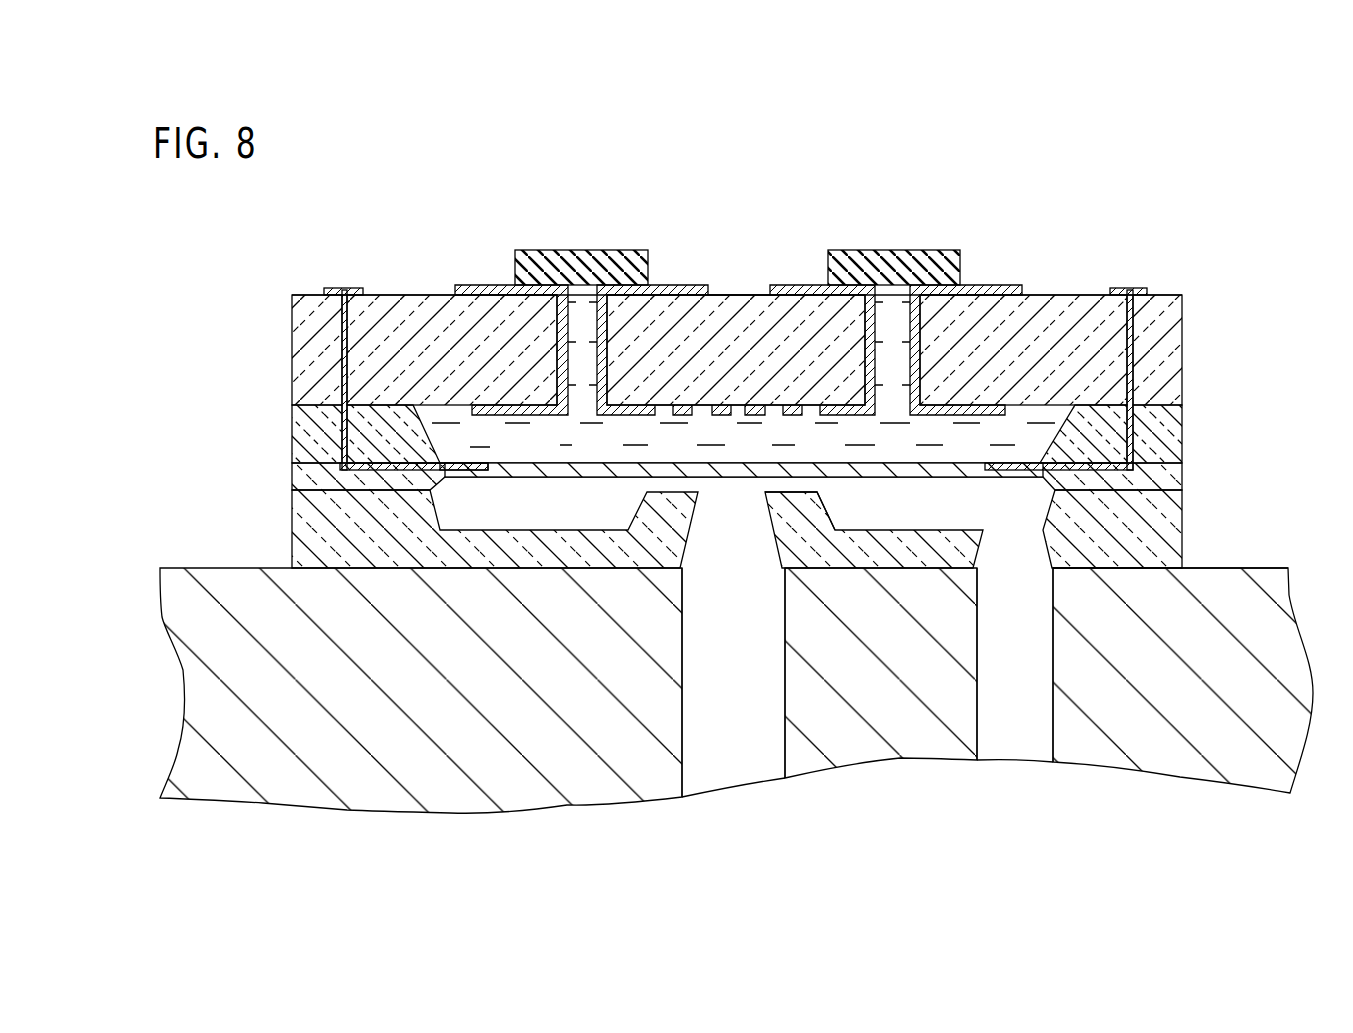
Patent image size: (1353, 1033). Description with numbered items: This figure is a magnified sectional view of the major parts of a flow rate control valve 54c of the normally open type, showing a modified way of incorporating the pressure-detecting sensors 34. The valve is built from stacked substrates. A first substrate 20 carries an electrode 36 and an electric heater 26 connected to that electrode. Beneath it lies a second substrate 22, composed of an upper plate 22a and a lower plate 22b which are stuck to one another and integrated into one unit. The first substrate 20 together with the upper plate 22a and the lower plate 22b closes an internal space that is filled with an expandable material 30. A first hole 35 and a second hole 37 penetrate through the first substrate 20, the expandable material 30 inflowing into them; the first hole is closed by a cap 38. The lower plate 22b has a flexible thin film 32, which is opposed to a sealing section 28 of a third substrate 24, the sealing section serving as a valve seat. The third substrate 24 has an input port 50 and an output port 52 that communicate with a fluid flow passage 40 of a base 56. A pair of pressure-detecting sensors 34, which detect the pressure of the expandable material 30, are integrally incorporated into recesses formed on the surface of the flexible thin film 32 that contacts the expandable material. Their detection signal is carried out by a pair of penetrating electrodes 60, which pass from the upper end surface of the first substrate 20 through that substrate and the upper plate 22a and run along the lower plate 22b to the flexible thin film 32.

The first substrate 20 is at (292, 350).
The second substrate 22 is at (639, 442).
The upper plate 22a is at (292, 435).
The lower plate 22b is at (292, 485).
The third substrate 24 is at (292, 540).
The electric heater 26 is at (723, 407).
The sealing section 28 is at (795, 492).
The expandable material 30 is at (462, 466).
The flexible thin film 32 is at (942, 470).
The pressure-detecting sensor 34 is at (478, 430).
The first hole 35 is at (596, 342).
The electrode 36 is at (490, 285).
The second hole 37 is at (873, 315).
The cap 38 is at (565, 250).
The fluid flow passage 40 is at (736, 690).
The input port 50 is at (730, 545).
The output port 52 is at (1007, 550).
The flow rate control valve 54c is at (1130, 226).
The base 56 is at (1262, 556).
The penetrating electrode 60 is at (345, 288).